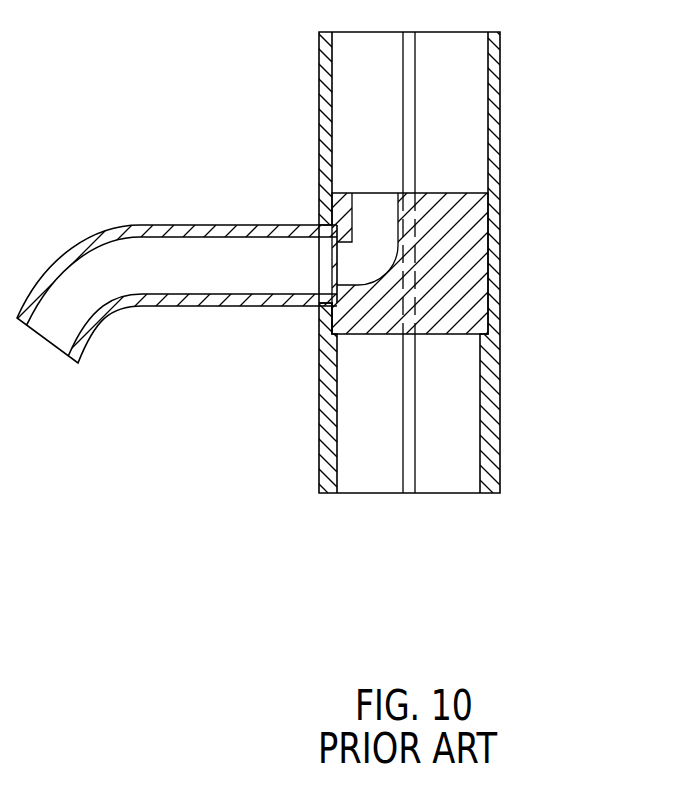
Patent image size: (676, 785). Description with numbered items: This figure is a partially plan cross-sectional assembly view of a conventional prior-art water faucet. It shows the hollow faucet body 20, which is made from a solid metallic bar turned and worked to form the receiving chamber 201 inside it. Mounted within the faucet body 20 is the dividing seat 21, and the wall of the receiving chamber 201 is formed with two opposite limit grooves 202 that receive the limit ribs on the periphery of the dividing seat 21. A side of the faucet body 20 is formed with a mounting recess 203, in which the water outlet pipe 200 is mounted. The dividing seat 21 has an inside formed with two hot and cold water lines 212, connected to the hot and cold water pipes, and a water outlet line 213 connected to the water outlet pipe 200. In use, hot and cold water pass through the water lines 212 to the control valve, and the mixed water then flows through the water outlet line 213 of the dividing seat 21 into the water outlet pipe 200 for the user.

The faucet body 20 is at (318, 405).
The dividing seat 21 is at (482, 245).
The water outlet pipe 200 is at (132, 226).
The receiving chamber 201 is at (383, 478).
The limit grooves 202 is at (406, 101).
The mounting recess 203 is at (320, 323).
The water lines 212 is at (450, 299).
The water outlet line 213 is at (368, 225).